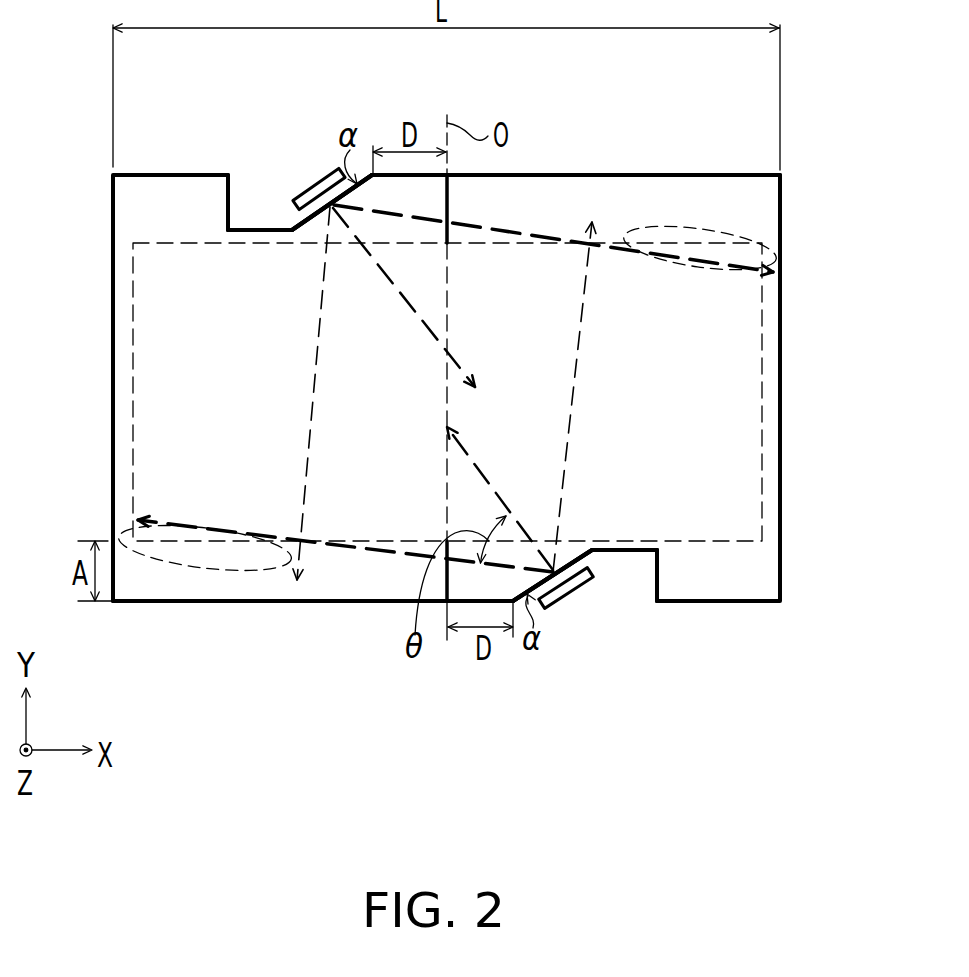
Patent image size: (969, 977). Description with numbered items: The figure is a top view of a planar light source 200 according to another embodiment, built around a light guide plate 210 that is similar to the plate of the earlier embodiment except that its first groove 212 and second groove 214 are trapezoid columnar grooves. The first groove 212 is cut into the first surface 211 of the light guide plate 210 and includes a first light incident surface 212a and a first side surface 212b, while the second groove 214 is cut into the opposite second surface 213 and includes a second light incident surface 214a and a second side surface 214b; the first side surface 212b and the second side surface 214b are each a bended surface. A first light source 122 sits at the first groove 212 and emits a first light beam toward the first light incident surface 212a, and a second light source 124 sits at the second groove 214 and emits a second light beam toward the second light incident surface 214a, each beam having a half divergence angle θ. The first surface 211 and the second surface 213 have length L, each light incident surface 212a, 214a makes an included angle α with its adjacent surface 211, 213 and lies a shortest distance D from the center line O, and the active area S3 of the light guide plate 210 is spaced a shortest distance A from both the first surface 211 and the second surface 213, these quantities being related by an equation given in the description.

The planar light source 200 is at (842, 748).
The light guide plate 210 is at (727, 382).
The first surface 211 is at (333, 606).
The second surface 213 is at (655, 173).
The second groove 214 is at (265, 214).
The second light incident surface 214a is at (292, 225).
The second side surface 214b is at (245, 228).
The first groove 212 is at (618, 572).
The first light incident surface 212a is at (588, 555).
The first side surface 212b is at (654, 578).
The second light source 124 is at (328, 178).
The first light source 122 is at (548, 597).
The active area S3 is at (173, 398).